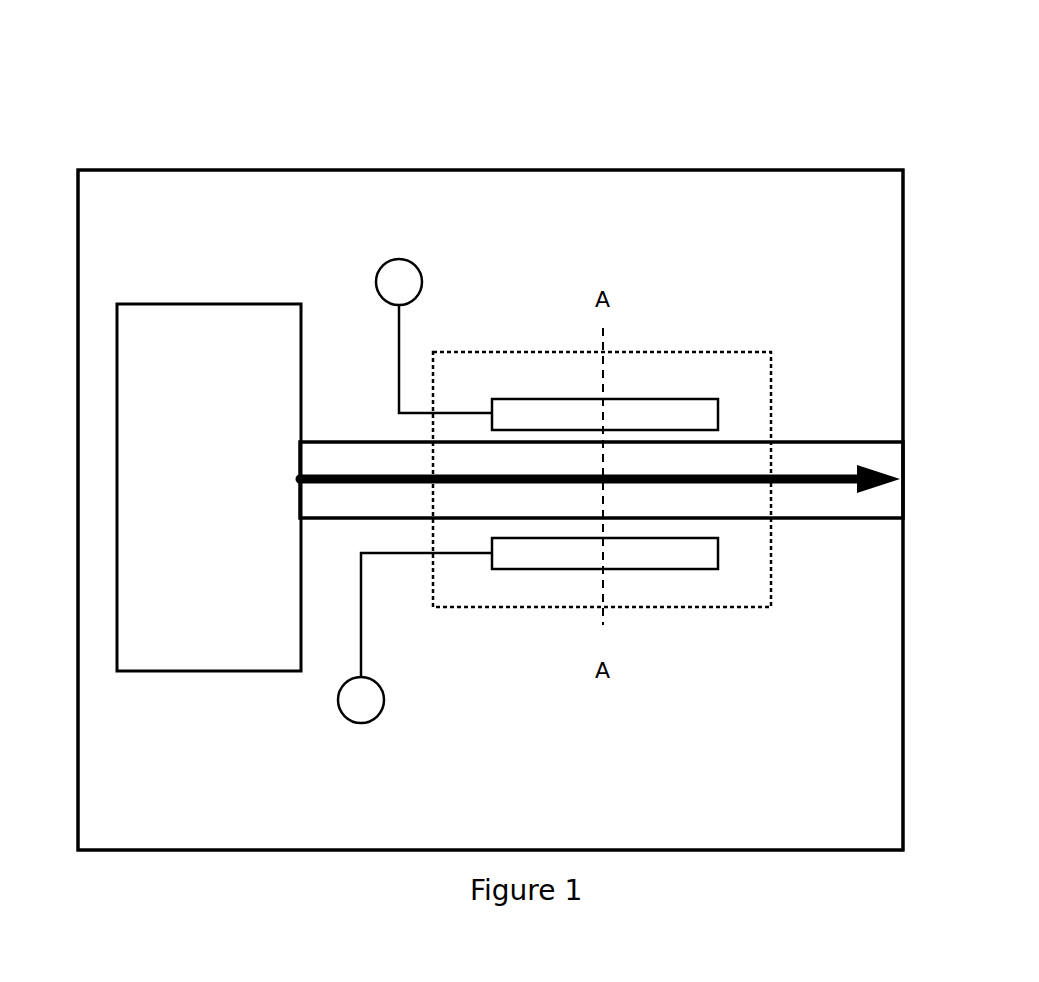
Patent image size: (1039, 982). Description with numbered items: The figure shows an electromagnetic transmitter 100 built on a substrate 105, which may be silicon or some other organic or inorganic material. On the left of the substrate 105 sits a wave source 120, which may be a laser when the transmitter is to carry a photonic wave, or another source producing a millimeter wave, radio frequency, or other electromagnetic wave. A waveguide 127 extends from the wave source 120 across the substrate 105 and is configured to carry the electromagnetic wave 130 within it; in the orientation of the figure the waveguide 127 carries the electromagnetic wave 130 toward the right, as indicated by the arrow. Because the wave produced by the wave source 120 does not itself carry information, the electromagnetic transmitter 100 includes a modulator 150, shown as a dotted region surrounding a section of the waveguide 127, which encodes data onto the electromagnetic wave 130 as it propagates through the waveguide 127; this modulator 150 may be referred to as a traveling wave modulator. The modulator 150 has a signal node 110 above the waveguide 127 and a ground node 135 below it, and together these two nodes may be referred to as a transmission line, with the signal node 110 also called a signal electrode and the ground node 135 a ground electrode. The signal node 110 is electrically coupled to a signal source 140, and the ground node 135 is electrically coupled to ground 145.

The electromagnetic transmitter 100 is at (850, 114).
The substrate 105 is at (490, 510).
The signal node 110 is at (718, 399).
The wave source 120 is at (209, 487).
The waveguide 127 is at (333, 440).
The electromagnetic wave 130 is at (876, 470).
The ground node 135 is at (720, 552).
The signal source 140 is at (398, 278).
The ground 145 is at (361, 700).
The modulator 150 is at (720, 608).